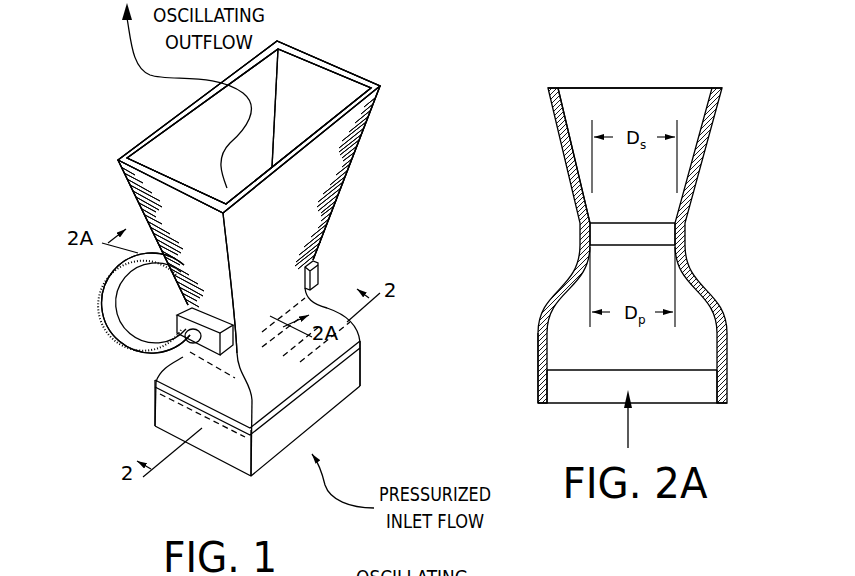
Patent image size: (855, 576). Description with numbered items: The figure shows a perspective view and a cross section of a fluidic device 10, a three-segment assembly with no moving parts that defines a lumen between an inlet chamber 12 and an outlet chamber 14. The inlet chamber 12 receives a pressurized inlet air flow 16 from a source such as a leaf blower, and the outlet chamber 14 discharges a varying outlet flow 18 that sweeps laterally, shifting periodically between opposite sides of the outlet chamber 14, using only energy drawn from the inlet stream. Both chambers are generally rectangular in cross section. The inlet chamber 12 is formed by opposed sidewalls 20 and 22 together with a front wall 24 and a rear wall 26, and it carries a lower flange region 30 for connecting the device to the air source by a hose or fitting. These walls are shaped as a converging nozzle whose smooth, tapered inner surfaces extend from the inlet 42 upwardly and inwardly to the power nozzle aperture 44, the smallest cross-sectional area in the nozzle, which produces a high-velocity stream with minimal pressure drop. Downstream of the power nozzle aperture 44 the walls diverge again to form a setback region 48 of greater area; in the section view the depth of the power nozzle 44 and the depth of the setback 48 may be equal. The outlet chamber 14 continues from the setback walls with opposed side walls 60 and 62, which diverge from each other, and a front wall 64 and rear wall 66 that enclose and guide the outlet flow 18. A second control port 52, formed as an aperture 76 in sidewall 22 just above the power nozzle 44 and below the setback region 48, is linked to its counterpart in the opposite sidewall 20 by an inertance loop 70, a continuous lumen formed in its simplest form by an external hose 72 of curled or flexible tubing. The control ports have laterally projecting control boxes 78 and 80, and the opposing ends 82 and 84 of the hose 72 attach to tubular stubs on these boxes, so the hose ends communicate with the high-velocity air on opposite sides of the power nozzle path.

In FIG. 1, the fluidic device 10 is at (381, 160).
In FIG. 1, the inlet chamber 12 is at (358, 328).
In FIG. 1, the outlet chamber 14 is at (373, 121).
In FIG. 1, the inlet air flow 16 is at (323, 487).
In FIG. 2A, the inlet air flow 16 is at (631, 441).
In FIG. 1, the varying outlet flow 18 is at (137, 70).
In FIG. 1, the sidewall 20 is at (182, 360).
In FIG. 2A, the sidewall 22 is at (682, 347).
In FIG. 1, the front wall 24 is at (360, 352).
In FIG. 2A, the front wall 24 is at (727, 355).
In FIG. 2A, the rear wall 26 is at (538, 352).
In FIG. 1, the lower flange region 30 is at (207, 449).
In FIG. 2A, the lower flange region 30 is at (530, 392).
In FIG. 1, the inlet 42 is at (325, 382).
In FIG. 2A, the power nozzle aperture 44 is at (607, 262).
In FIG. 2A, the setback region 48 is at (603, 213).
In FIG. 2A, the second control port 52 is at (655, 222).
In FIG. 1, the side wall 60 is at (117, 192).
In FIG. 2A, the side wall 60 is at (723, 89).
In FIG. 1, the side wall 62 is at (328, 84).
In FIG. 2A, the side wall 62 is at (587, 105).
In FIG. 1, the front wall 64 is at (318, 182).
In FIG. 2A, the front wall 64 is at (707, 143).
In FIG. 1, the rear wall 66 is at (148, 155).
In FIG. 2A, the rear wall 66 is at (559, 133).
In FIG. 1, the inertance loop 70 is at (125, 350).
In FIG. 1, the hose 72 is at (124, 303).
In FIG. 2A, the aperture 76 is at (658, 233).
In FIG. 1, the control box 78 is at (201, 320).
In FIG. 1, the control box 80 is at (320, 262).
In FIG. 1, the hose end 82 is at (188, 341).
In FIG. 1, the hose end 84 is at (327, 297).